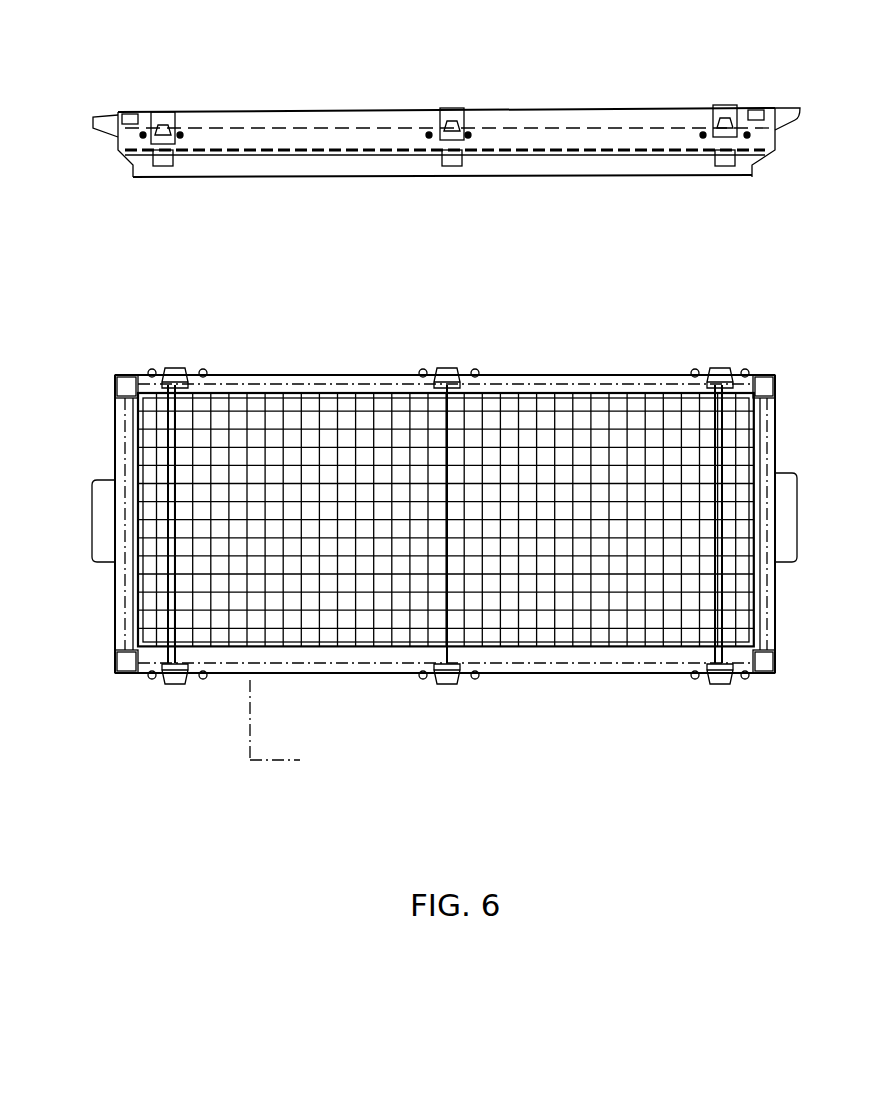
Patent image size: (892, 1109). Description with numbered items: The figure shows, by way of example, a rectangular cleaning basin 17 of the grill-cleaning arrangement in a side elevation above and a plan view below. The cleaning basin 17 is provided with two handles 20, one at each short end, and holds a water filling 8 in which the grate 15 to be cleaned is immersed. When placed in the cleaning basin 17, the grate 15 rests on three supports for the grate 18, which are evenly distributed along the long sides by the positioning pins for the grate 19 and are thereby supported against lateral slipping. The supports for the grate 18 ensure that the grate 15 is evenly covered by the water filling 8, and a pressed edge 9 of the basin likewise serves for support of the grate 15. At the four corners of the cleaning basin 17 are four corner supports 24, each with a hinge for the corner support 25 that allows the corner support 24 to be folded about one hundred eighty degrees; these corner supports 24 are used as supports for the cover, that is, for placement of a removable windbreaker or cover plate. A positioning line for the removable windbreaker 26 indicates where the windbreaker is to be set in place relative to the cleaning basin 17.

The water filling 8 is at (575, 235).
The pressed edge 9 is at (248, 222).
The grate 15 is at (360, 222).
The cleaning basin 17 is at (678, 235).
The supports for grate 18 is at (718, 103).
The positioning pins for grate 19 is at (143, 222).
The handle of grill basin 20 is at (93, 118).
The corner support 24 is at (140, 114).
The hinge for corner support 25 is at (132, 114).
The positioning line for removable windbreaker 26 is at (275, 721).